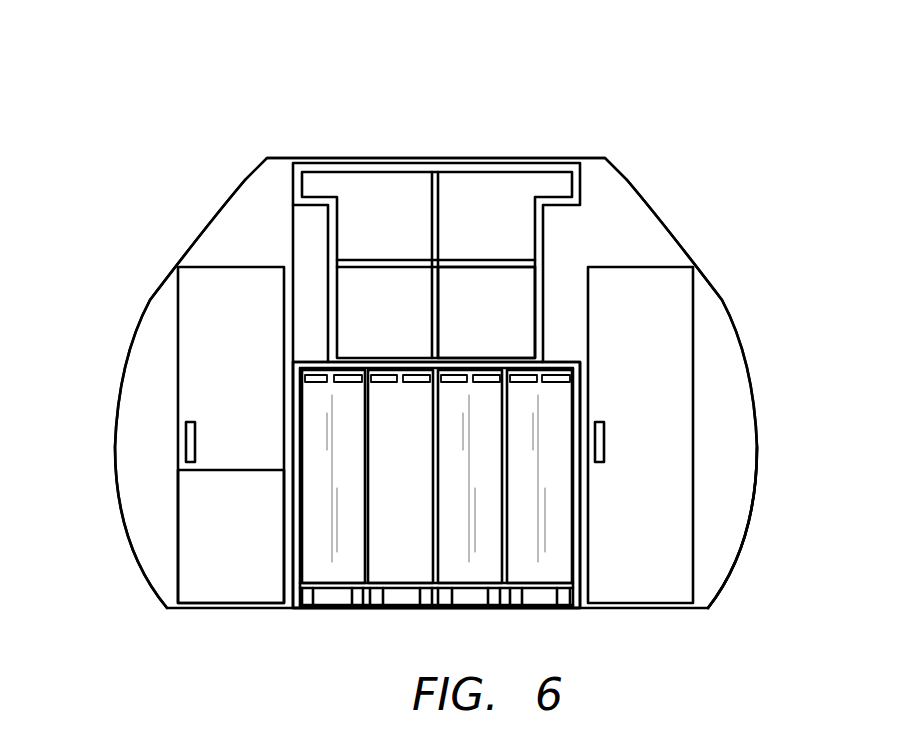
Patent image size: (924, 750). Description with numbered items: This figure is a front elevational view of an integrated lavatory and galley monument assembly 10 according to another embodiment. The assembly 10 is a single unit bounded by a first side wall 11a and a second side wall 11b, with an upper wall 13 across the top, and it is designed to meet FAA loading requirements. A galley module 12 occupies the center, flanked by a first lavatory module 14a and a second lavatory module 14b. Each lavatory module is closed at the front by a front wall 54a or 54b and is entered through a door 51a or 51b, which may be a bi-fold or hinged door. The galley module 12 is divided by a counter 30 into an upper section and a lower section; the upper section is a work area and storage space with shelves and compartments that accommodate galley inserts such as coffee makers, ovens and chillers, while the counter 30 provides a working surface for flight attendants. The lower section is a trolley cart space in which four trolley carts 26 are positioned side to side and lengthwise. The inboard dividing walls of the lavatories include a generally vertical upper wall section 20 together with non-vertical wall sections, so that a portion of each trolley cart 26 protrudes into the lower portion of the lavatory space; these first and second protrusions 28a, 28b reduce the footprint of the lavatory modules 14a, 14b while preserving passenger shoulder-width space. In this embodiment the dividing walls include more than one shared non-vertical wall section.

The integrated lavatory and galley monument assembly 10 is at (690, 164).
The first side wall 11a is at (150, 303).
The second side wall 11b is at (757, 440).
The galley module 12 is at (435, 118).
The upper wall 13 is at (573, 158).
The first lavatory module 14a is at (252, 241).
The second lavatory module 14b is at (595, 237).
The upper wall section 20 is at (543, 264).
The trolley cart 26 is at (390, 572).
The first protrusion 28a is at (312, 360).
The second protrusion 28b is at (557, 361).
The counter 30 is at (468, 358).
The first door 51a is at (200, 322).
The second door 51b is at (678, 327).
The first front wall 54a is at (292, 486).
The second front wall 54b is at (735, 493).